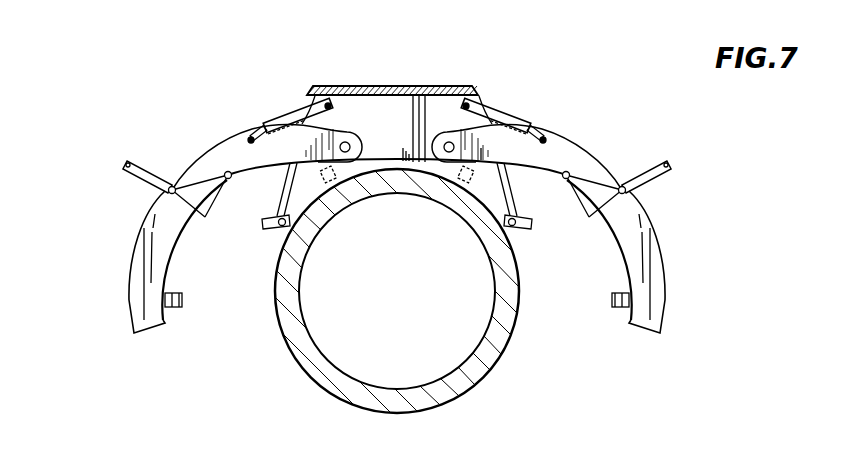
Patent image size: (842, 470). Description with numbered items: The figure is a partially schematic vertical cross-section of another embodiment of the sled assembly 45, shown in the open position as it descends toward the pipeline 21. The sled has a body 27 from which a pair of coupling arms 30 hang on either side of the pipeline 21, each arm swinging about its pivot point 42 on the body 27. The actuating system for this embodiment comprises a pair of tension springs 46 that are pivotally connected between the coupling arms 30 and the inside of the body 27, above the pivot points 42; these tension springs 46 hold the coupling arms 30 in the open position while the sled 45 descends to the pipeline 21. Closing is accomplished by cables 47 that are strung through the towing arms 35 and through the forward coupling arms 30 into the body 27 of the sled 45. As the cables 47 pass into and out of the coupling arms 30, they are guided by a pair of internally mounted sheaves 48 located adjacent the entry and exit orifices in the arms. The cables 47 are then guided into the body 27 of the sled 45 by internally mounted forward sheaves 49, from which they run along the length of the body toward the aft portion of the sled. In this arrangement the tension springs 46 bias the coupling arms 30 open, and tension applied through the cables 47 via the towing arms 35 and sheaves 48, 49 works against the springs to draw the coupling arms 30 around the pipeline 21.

The pipeline 21 is at (487, 372).
The body 27 is at (416, 85).
The coupling arms 30 is at (132, 268).
The towing arms 35 is at (132, 172).
The pivot points 42 is at (431, 147).
The sled assembly 45 is at (518, 47).
The tension springs 46 is at (296, 118).
The cables 47 is at (207, 178).
The sheaves 48 is at (205, 217).
The forward sheaves 49 is at (270, 237).